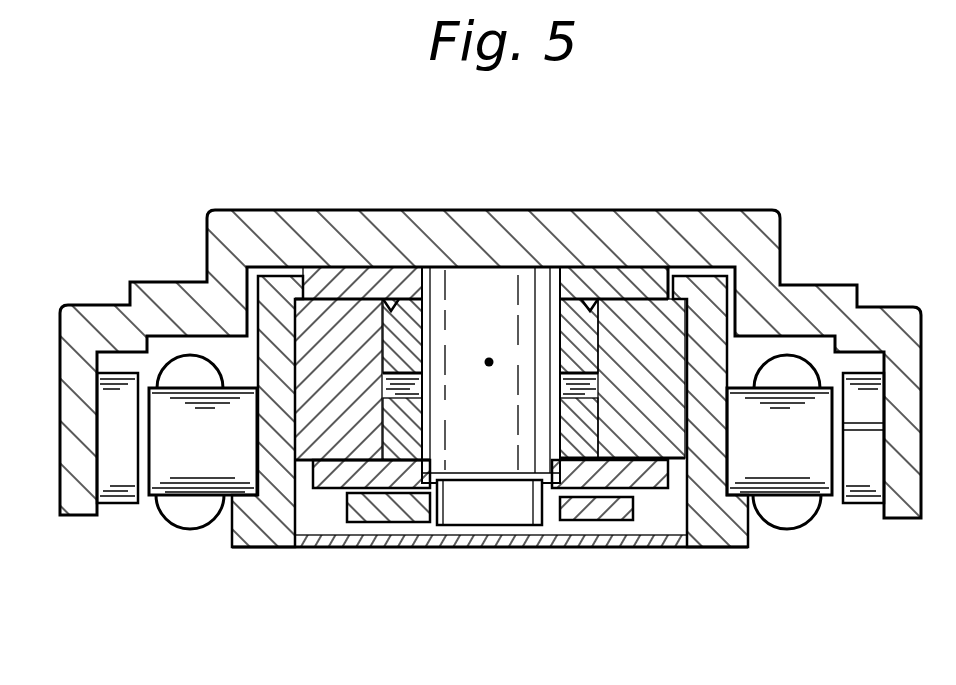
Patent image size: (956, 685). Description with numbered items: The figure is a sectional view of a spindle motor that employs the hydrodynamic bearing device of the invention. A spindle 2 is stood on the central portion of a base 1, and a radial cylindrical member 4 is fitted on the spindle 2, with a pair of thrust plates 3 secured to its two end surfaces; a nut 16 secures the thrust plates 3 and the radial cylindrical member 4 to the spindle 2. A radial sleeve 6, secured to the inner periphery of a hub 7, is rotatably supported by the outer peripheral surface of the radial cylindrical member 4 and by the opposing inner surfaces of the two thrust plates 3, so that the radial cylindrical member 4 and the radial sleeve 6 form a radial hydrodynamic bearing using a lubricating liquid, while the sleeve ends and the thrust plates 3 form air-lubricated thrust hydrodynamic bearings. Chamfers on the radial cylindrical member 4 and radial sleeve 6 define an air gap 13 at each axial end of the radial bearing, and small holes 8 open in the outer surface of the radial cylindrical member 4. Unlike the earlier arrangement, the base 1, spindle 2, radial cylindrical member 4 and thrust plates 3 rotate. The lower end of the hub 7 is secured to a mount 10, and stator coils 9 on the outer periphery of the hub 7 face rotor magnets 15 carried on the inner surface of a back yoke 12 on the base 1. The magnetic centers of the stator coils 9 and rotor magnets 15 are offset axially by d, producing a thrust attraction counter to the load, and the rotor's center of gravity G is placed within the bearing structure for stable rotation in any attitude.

The base 1 is at (526, 240).
The spindle 2 is at (458, 287).
The thrust plates 3 is at (643, 280).
The radial cylindrical member 4 is at (406, 263).
The radial sleeve 6 is at (675, 305).
The hub 7 is at (272, 285).
The small holes 8 is at (382, 388).
The stator coils 9 is at (769, 468).
The mount 10 is at (482, 540).
The back yoke 12 is at (84, 497).
The air gap 13 is at (598, 268).
The rotor magnets 15 is at (863, 483).
The nut 16 is at (367, 507).
The center of gravity G is at (486, 380).
The offset d is at (855, 400).